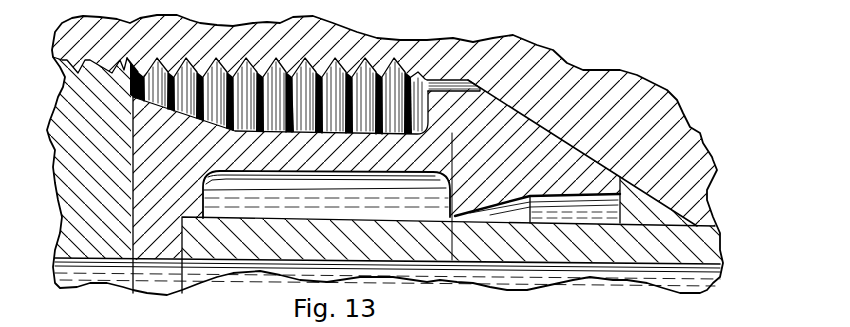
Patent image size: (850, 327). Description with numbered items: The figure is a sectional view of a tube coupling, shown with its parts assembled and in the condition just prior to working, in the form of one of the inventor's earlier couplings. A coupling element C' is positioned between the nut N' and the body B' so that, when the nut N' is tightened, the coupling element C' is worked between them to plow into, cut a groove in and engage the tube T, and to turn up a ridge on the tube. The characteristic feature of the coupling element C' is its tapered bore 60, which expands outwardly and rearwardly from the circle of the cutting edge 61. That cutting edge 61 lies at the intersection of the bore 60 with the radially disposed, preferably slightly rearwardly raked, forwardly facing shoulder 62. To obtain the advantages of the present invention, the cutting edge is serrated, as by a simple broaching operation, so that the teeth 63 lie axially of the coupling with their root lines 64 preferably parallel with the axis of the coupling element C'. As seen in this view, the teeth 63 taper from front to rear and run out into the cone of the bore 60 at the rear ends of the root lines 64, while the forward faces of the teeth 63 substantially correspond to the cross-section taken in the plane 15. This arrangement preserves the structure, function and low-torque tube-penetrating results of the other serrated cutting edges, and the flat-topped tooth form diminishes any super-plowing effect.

The body B' is at (217, 175).
The nut N' is at (388, 120).
The coupling element C' is at (376, 165).
The tube T is at (718, 284).
The plane 15- 15 is at (450, 240).
The tapered bore 60 is at (490, 178).
The cutting edge 61 is at (450, 217).
The shoulder 62 is at (425, 188).
The teeth 63 is at (520, 112).
The root lines 64 is at (520, 112).